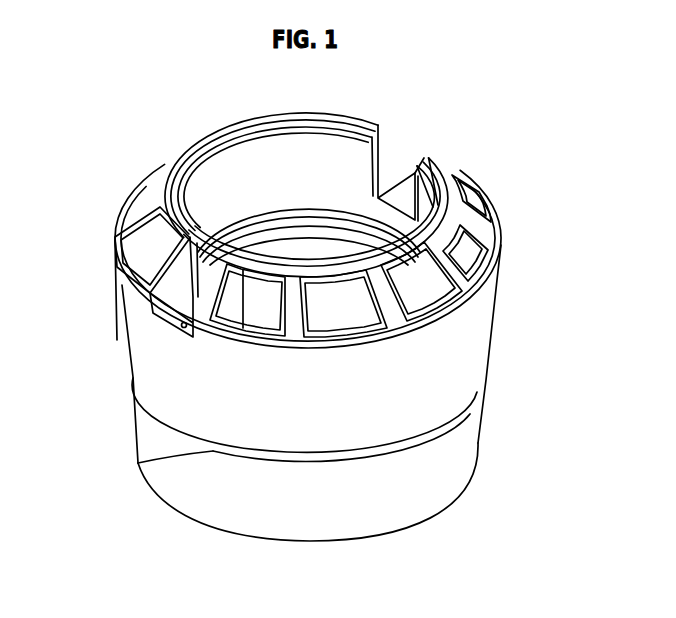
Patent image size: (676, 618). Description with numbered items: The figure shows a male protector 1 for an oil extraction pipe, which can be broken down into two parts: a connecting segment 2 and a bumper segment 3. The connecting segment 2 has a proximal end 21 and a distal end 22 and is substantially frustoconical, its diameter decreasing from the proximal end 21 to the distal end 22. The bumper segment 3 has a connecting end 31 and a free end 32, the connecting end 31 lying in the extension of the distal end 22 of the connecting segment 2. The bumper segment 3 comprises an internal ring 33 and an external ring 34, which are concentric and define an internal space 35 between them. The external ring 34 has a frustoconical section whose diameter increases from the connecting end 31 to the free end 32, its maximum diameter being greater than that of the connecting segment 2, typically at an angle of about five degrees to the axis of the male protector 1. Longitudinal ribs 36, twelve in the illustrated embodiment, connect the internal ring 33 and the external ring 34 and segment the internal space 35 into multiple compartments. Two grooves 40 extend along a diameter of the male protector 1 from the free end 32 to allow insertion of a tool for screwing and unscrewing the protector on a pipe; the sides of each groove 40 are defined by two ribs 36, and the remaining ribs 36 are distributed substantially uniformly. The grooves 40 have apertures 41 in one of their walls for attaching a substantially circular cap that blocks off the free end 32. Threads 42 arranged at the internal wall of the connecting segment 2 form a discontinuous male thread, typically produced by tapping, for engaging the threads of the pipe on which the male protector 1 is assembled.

The male protector 1 is at (170, 126).
The connecting segment 2 is at (454, 438).
The bumper segment 3 is at (470, 336).
The proximal end 21 is at (217, 524).
The distal end 22 is at (135, 466).
The connecting end 31 is at (133, 392).
The free end 32 is at (313, 114).
The internal ring 33 is at (258, 153).
The external ring 34 is at (158, 362).
The internal space 35 is at (160, 208).
The longitudinal ribs 36 is at (453, 257).
The grooves 40 is at (390, 160).
The apertures 41 is at (183, 326).
The threads 42 is at (327, 224).